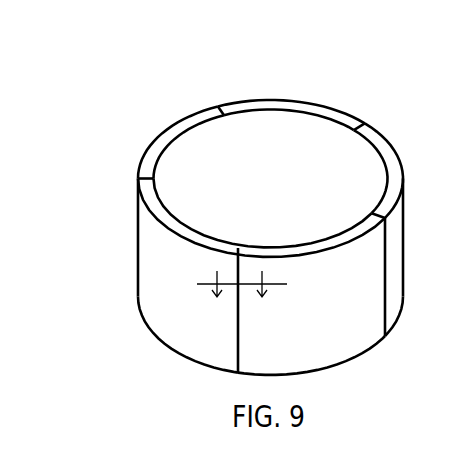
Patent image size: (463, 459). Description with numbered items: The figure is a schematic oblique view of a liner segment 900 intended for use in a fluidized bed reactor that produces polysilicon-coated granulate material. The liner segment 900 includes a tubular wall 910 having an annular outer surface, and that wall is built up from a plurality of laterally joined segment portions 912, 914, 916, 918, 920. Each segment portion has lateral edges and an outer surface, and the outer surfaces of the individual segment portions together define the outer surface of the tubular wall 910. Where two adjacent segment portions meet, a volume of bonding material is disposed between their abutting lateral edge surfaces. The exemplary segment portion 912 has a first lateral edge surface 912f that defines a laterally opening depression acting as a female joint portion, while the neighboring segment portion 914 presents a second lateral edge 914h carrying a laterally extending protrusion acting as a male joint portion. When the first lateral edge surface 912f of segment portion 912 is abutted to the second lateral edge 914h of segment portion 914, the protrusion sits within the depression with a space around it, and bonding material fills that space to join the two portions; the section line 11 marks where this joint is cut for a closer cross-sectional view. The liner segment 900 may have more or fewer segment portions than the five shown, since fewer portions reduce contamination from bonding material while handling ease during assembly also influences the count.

The liner segment 900 is at (263, 86).
The tubular wall 910 is at (128, 241).
The segment portion 912 is at (188, 276).
The first lateral edge surface 912f is at (237, 313).
The segment portion 914 is at (311, 336).
The second lateral edge 914h is at (239, 331).
The segment portion 916 is at (393, 265).
The segment portion 918 is at (320, 112).
The segment portion 920 is at (175, 132).
The section line 11 is at (241, 279).